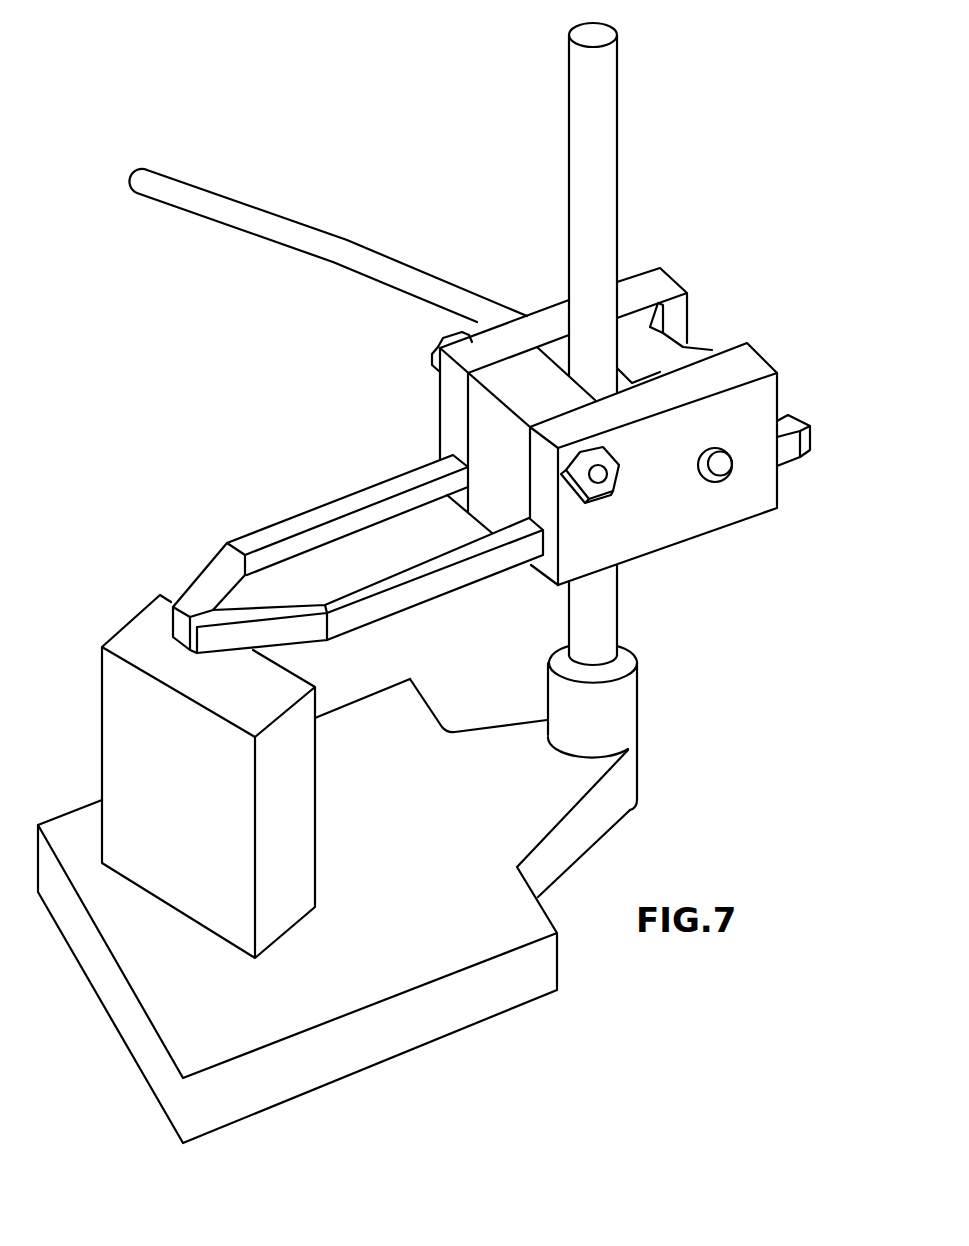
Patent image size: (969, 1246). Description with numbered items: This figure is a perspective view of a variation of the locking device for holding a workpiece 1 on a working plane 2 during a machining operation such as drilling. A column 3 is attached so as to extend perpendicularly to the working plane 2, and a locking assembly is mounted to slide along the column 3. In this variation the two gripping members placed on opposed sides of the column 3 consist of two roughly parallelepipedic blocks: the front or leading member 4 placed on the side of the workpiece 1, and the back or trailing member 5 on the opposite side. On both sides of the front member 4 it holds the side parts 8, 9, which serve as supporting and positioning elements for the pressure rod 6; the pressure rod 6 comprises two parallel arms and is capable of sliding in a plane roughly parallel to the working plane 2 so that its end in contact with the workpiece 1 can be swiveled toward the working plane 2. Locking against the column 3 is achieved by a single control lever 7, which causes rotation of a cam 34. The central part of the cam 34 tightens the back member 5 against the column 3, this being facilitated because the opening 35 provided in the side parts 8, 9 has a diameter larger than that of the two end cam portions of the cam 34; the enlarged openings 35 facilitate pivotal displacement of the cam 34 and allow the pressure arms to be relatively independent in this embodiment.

The workpiece 1 is at (126, 622).
The working plane 2 is at (77, 826).
The column 3 is at (619, 172).
The front gripping member 4 is at (490, 396).
The back gripping member 5 is at (714, 346).
The pressure rod 6 is at (325, 602).
The control lever 7 is at (233, 199).
The side part 8 is at (669, 277).
The side part 9 is at (741, 364).
The cam 34 is at (734, 474).
The opening 35 is at (706, 488).